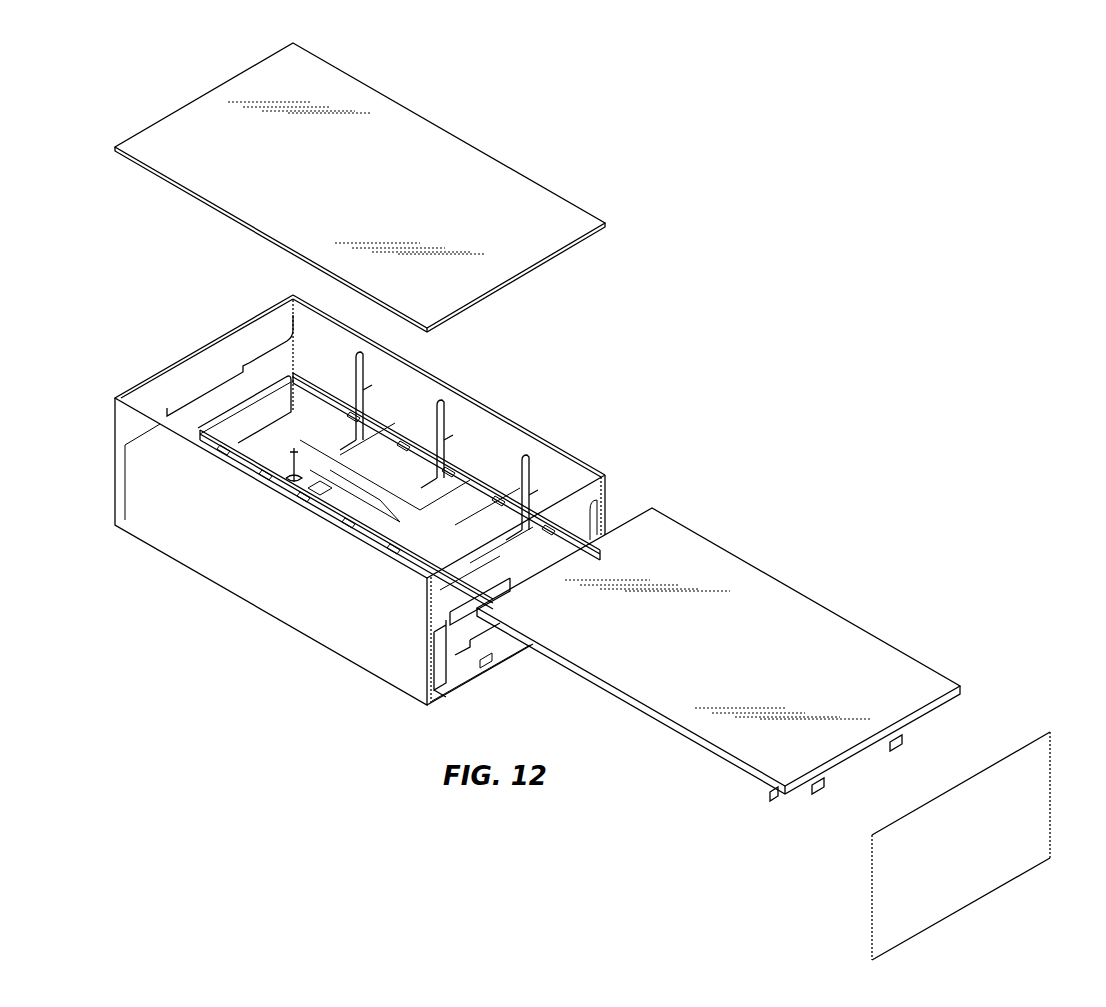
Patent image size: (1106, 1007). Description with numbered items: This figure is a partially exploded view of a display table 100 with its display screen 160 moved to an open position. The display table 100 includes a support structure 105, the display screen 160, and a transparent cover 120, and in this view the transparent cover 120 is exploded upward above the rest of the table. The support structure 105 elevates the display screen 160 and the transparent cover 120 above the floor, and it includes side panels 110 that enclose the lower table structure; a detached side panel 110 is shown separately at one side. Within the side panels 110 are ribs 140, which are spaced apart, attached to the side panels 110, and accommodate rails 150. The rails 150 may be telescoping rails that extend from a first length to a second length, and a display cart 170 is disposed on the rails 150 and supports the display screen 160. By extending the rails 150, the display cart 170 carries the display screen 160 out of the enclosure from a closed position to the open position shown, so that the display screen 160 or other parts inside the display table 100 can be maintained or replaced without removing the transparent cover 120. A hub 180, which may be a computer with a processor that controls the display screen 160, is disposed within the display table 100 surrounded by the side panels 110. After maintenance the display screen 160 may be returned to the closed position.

The display table 100 is at (788, 318).
The support structure 105 is at (140, 359).
The side panels 110 is at (165, 525).
The transparent cover 120 is at (505, 176).
The ribs 140 is at (462, 527).
The rails 150 is at (463, 470).
The display screen 160 is at (765, 600).
The display cart 170 is at (815, 792).
The hub 180 is at (440, 662).